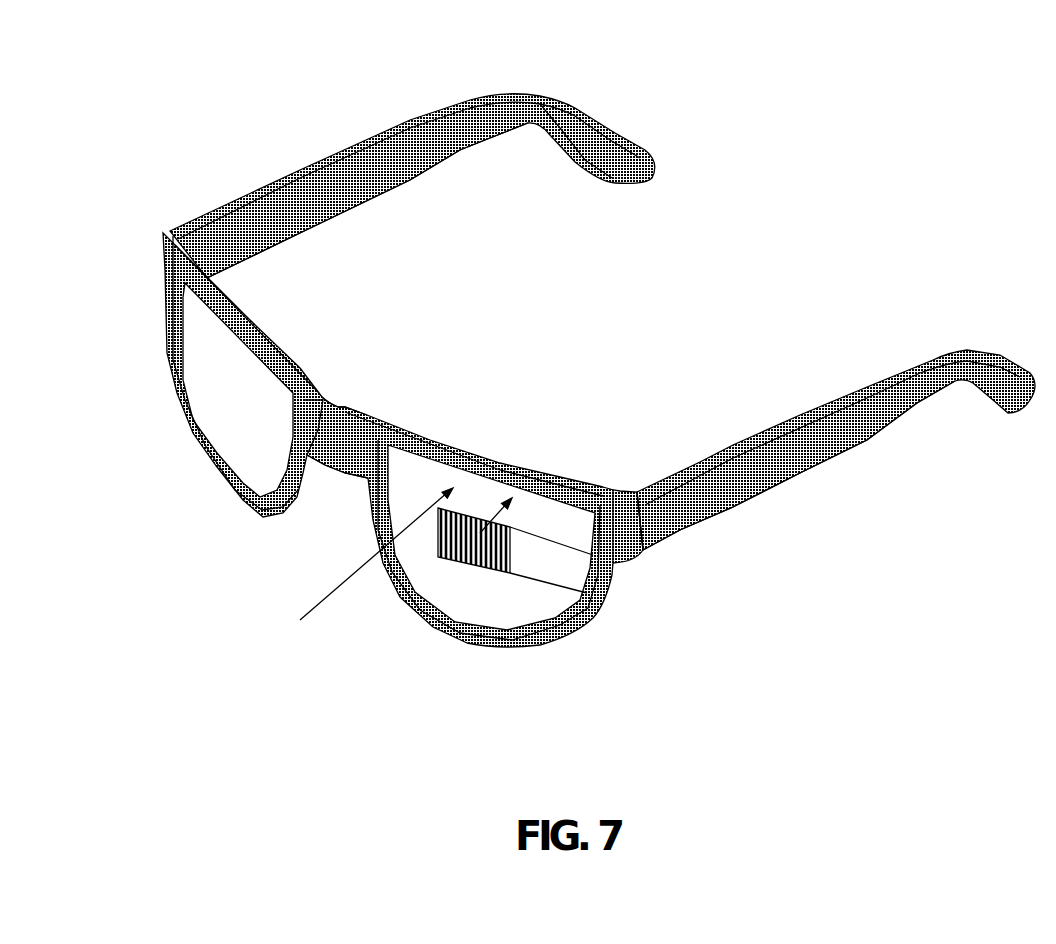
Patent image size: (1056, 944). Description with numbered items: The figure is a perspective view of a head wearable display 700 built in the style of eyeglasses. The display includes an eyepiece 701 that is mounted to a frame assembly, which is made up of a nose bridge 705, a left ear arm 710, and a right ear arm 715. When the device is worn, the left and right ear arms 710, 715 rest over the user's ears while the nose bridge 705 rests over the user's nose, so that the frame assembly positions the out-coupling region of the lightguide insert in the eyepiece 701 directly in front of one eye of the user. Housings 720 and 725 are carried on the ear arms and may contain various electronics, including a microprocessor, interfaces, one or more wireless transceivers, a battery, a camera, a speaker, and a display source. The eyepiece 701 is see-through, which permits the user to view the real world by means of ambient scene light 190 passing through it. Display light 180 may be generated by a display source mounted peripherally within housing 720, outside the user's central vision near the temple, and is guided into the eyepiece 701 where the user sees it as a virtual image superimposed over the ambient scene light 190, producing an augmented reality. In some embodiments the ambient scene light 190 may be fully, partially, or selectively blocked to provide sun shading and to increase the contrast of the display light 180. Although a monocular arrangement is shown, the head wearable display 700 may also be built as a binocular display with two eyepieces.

The head wearable display 700 is at (886, 107).
The eyepiece 701 is at (417, 645).
The nose bridge 705 is at (356, 391).
The left ear arm 710 is at (786, 377).
The right ear arm 715 is at (285, 146).
The housing 720 is at (673, 512).
The housing 725 is at (250, 235).
The display light 180 is at (482, 530).
The ambient scene light 190 is at (313, 608).